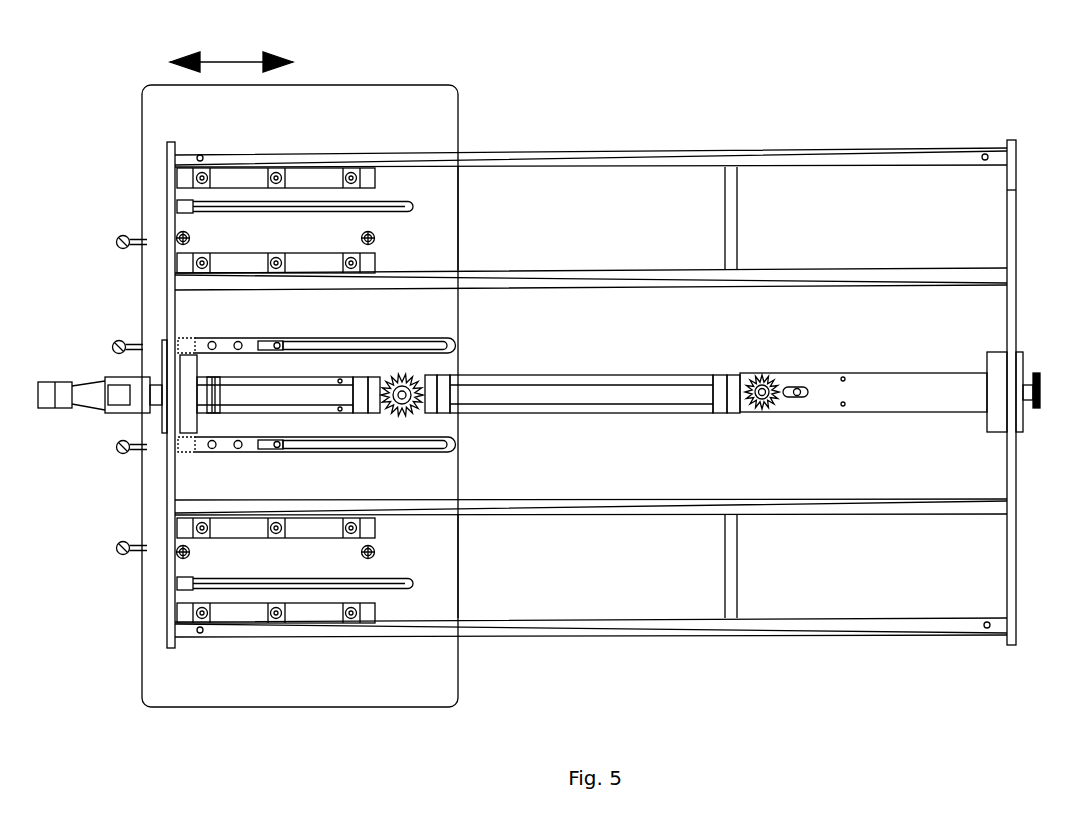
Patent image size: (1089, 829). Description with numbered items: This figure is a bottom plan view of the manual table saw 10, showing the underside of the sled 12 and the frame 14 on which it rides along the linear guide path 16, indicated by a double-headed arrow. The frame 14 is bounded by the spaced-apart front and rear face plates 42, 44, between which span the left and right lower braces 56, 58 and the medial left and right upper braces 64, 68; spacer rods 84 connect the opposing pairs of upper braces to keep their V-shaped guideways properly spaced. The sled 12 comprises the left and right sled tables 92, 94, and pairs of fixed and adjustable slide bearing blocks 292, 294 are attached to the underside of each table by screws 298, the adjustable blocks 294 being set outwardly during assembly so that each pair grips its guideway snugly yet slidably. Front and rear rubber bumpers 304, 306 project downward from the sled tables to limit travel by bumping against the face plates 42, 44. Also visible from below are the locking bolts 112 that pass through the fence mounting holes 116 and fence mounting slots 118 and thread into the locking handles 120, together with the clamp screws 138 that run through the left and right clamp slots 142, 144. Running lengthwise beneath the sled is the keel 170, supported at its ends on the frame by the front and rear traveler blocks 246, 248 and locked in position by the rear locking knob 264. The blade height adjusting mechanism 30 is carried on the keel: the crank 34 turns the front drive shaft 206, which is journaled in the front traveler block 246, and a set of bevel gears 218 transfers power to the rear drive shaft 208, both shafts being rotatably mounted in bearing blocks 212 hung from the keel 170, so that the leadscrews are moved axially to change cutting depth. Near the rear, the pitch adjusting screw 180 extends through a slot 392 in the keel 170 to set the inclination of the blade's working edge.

The table saw 10 is at (578, 392).
The sled 12 is at (351, 392).
The frame 14 is at (578, 413).
The guide path 16 is at (233, 62).
The blade height adjusting mechanism 30 is at (790, 348).
The crank 34 is at (50, 404).
The front face plate 42 is at (170, 628).
The rear face plate 44 is at (1018, 615).
The left lower brace 56 is at (972, 630).
The right lower brace 58 is at (952, 152).
The medial left upper brace 64 is at (978, 505).
The medial right upper brace 68 is at (915, 272).
The spacer rods 84 is at (728, 212).
The left sled table 92 is at (375, 690).
The right sled table 94 is at (295, 95).
The locking bolts 112 is at (205, 213).
The fence mounting holes 116 is at (215, 342).
The fence mounting slots 118 is at (275, 215).
The locking handles 120 is at (116, 347).
The clamp screws 138 is at (277, 345).
The left clamp slot 142 is at (345, 452).
The right clamp slot 144 is at (440, 340).
The keel 170 is at (877, 382).
The pitch adjusting screw 180 is at (797, 397).
The front drive shaft 206 is at (300, 397).
The rear drive shaft 208 is at (640, 390).
The bearing blocks 212 is at (213, 380).
The bevel gears 218 is at (400, 412).
The front traveler block 246 is at (187, 400).
The rear traveler block 248 is at (1000, 435).
The rear locking knob 264 is at (1040, 392).
The fixed slide bearing blocks 292 is at (323, 266).
The adjustable slide bearing blocks 294 is at (290, 168).
The screws 298 is at (358, 168).
The front rubber bumper 304 is at (178, 232).
The rear rubber bumper 306 is at (378, 232).
The slot 392 is at (800, 390).